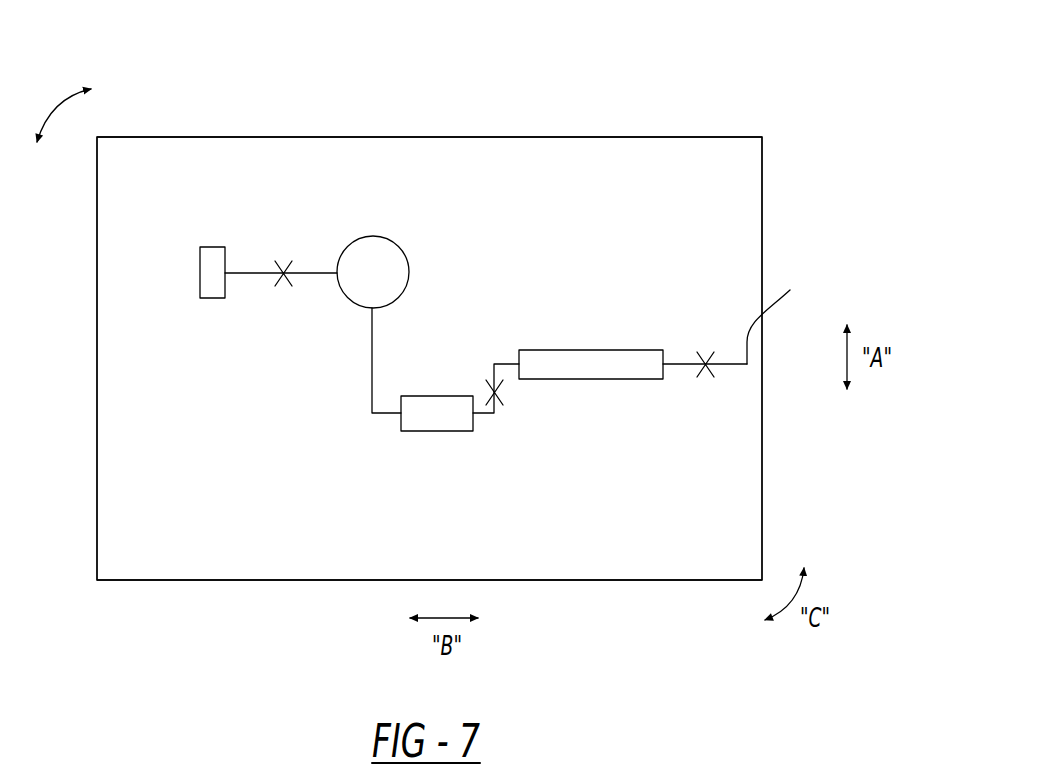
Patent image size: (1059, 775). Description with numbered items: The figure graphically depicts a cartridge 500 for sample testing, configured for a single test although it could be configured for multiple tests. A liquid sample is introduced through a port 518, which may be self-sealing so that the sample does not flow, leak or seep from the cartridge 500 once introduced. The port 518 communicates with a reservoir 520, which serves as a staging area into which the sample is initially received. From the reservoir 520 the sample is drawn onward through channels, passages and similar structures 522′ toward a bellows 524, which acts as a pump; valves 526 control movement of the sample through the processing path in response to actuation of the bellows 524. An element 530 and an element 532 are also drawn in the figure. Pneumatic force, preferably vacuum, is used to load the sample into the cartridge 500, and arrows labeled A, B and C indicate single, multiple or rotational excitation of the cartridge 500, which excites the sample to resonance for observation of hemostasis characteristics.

The cartridge 500 is at (640, 137).
The port 518 is at (790, 290).
The reservoir 520 is at (587, 350).
The pump 522′ is at (437, 431).
The bellows 524 is at (397, 247).
The valves 526 is at (281, 262).
The sensor 530 is at (200, 283).
The housing 532 is at (677, 542).